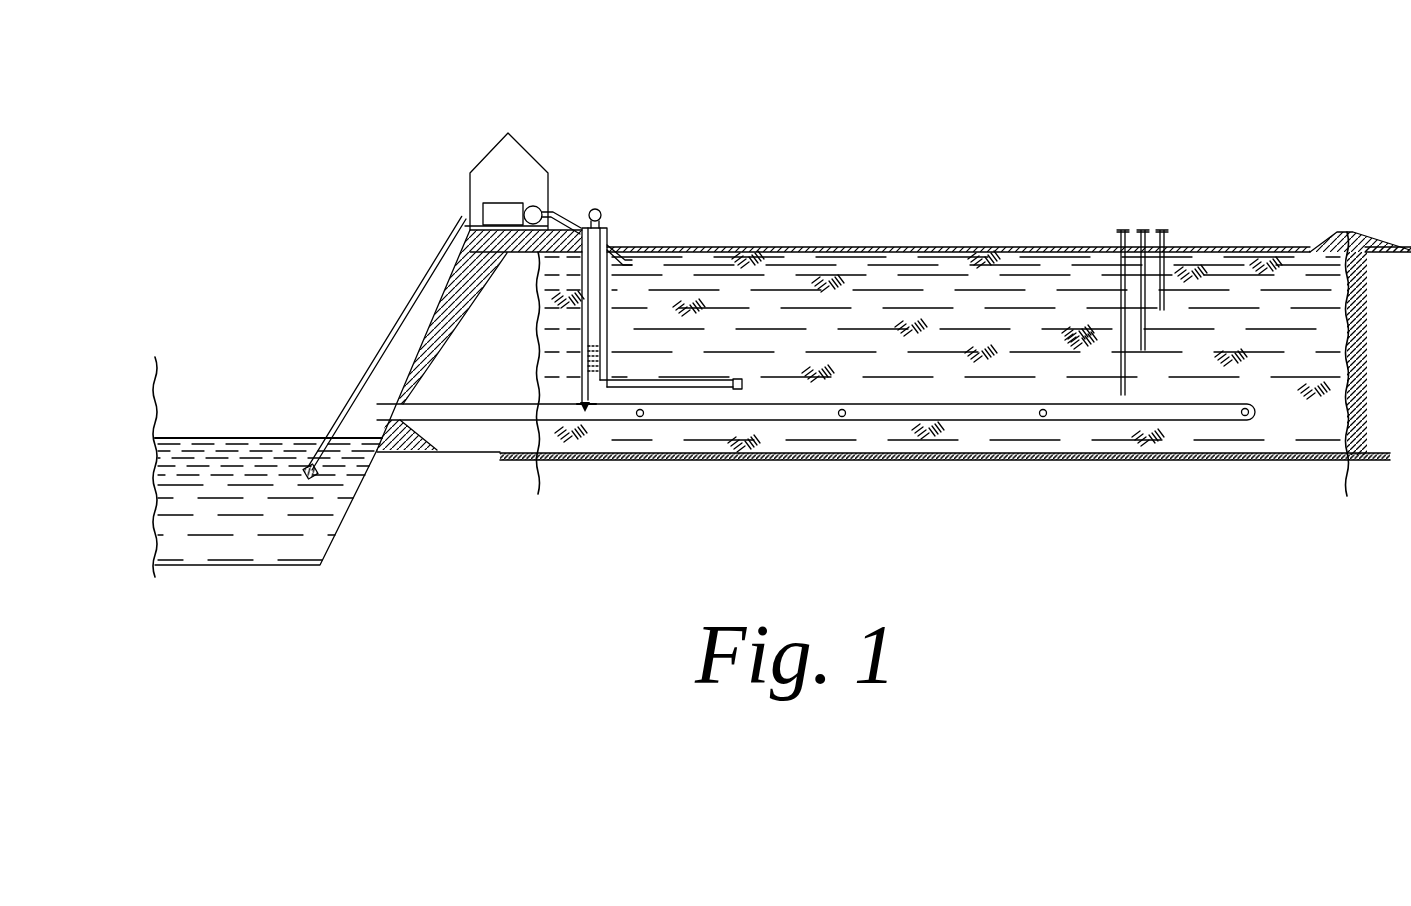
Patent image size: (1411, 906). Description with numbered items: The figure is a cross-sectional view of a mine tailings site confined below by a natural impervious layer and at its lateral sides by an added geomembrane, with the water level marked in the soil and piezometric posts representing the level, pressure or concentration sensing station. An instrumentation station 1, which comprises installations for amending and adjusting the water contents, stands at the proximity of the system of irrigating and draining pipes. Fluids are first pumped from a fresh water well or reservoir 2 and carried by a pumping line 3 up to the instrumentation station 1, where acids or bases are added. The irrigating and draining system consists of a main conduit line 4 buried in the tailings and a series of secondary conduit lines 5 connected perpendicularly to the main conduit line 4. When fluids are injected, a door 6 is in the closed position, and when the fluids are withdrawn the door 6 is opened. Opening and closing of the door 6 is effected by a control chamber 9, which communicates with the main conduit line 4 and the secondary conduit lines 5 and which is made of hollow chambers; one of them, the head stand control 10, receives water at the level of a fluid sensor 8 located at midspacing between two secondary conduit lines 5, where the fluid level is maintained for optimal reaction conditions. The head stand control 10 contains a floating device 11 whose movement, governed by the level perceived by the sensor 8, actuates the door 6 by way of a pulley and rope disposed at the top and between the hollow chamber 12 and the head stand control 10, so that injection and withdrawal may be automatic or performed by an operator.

The instrumentation station 1 is at (484, 133).
The fresh water well or reservoir 2 is at (267, 523).
The pumping line 3 is at (360, 369).
The main conduit line 4 is at (808, 421).
The secondary conduit lines 5 is at (1043, 418).
The door 6 is at (571, 414).
The fluid sensor 8 is at (737, 393).
The control chamber 9 is at (616, 200).
The head stand control 10 is at (606, 297).
The floating device 11 is at (604, 350).
The hollow chamber 12 is at (578, 340).